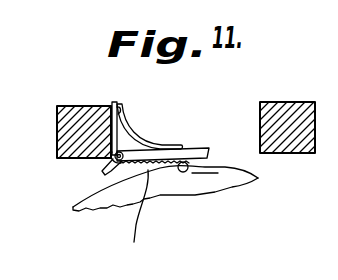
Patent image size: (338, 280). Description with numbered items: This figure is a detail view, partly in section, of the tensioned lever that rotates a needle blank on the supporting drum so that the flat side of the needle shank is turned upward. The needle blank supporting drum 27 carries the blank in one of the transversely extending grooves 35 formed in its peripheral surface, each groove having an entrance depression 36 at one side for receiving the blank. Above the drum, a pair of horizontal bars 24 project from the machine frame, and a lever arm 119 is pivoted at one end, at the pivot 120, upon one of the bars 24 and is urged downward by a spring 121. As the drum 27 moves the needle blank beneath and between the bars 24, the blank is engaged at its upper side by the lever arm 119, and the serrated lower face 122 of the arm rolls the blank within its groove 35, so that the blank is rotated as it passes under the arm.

The horizontal bars 24 is at (55, 122).
The spring 121 is at (152, 145).
The lever arm 119 is at (202, 144).
The pivot 120 is at (110, 173).
The transversely extending grooves 35 is at (185, 173).
The needle blank supporting drum 27 is at (236, 178).
The entrance depressions 36 is at (213, 173).
The serrated lower face 122 is at (142, 219).